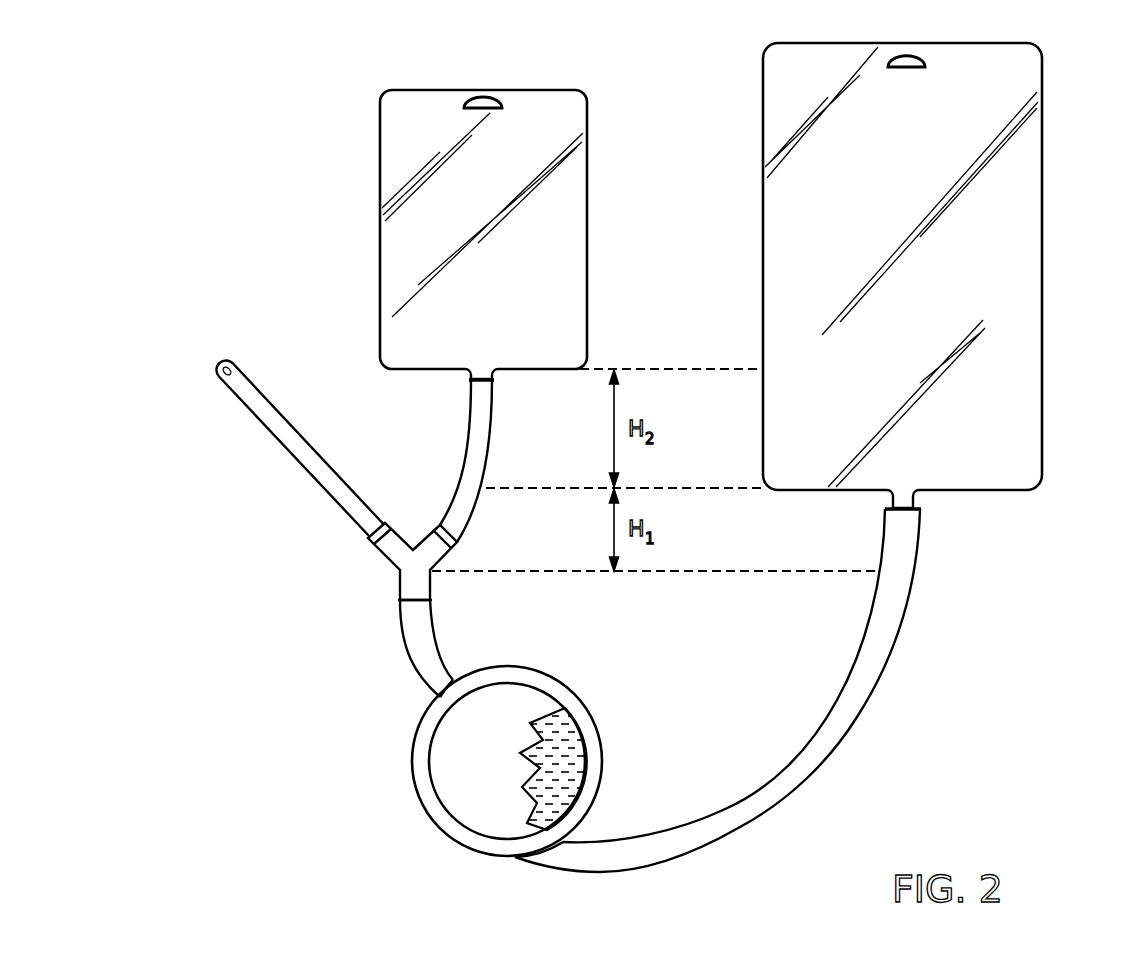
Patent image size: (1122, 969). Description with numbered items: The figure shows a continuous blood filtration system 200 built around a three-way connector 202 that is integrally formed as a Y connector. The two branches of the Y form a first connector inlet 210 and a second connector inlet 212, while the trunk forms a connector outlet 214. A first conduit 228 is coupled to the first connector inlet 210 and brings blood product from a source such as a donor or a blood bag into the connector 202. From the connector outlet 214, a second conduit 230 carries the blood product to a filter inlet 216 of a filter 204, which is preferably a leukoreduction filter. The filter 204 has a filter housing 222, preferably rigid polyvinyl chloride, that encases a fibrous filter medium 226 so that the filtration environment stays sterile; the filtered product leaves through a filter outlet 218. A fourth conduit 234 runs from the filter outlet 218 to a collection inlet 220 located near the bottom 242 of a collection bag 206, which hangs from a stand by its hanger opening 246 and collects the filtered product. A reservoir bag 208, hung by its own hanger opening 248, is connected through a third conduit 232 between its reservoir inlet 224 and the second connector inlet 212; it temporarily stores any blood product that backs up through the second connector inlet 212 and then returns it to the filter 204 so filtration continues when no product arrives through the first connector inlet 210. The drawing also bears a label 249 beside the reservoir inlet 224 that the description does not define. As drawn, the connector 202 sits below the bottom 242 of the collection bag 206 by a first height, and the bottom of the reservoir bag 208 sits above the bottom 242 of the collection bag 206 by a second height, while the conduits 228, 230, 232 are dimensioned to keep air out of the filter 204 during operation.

The continuous blood filtration system 200 is at (906, 755).
The three-way connector 202 is at (398, 568).
The filter 204 is at (470, 852).
The collection bag 206 is at (1043, 111).
The reservoir bag 208 is at (587, 220).
The first connector inlet 210 is at (360, 537).
The second connector inlet 212 is at (470, 535).
The connector outlet 214 is at (395, 608).
The filter inlet 216 is at (456, 672).
The filter outlet 218 is at (607, 826).
The collection inlet 220 is at (925, 490).
The filter housing 222 is at (420, 770).
The reservoir inlet 224 is at (498, 371).
The filter medium 226 is at (618, 705).
The first conduit 228 is at (272, 442).
The second conduit 230 is at (420, 673).
The third conduit 232 is at (520, 441).
The fourth conduit 234 is at (730, 836).
The bottom of collection bag 242 is at (855, 497).
The hanger opening 246 is at (904, 57).
The hanger opening 248 is at (482, 94).
The first bag outlet connector 249 is at (440, 391).